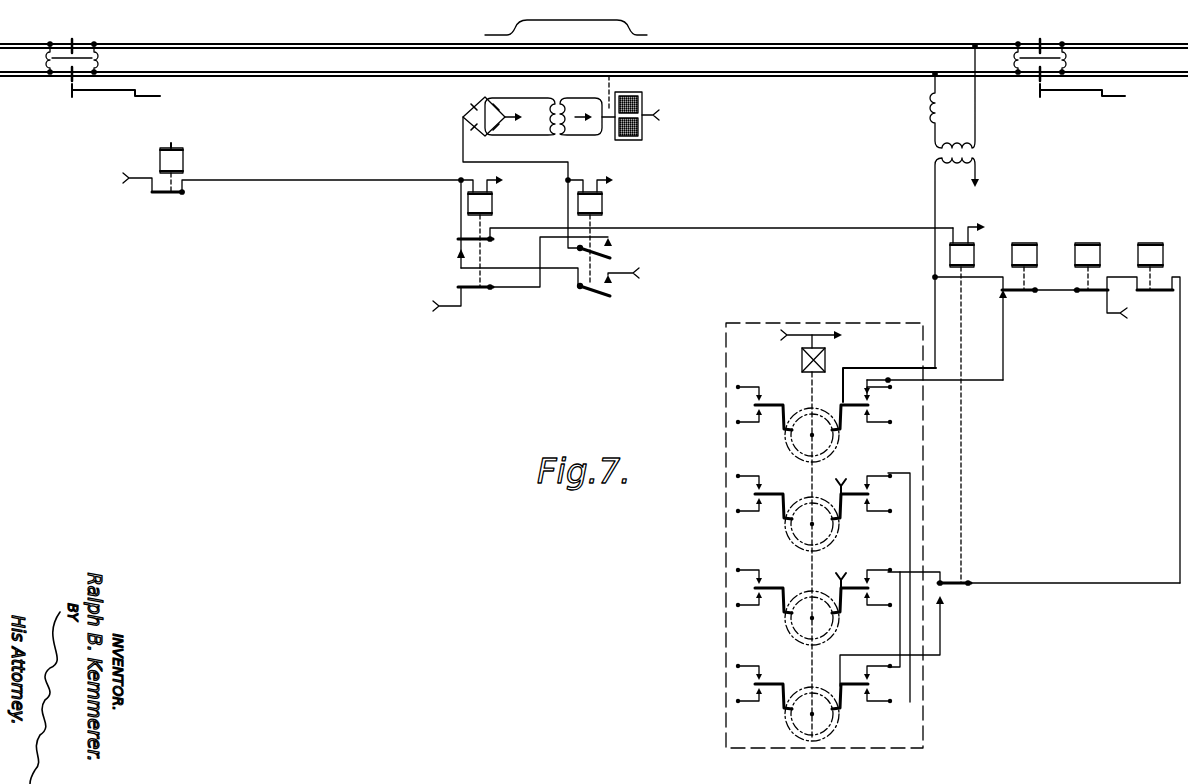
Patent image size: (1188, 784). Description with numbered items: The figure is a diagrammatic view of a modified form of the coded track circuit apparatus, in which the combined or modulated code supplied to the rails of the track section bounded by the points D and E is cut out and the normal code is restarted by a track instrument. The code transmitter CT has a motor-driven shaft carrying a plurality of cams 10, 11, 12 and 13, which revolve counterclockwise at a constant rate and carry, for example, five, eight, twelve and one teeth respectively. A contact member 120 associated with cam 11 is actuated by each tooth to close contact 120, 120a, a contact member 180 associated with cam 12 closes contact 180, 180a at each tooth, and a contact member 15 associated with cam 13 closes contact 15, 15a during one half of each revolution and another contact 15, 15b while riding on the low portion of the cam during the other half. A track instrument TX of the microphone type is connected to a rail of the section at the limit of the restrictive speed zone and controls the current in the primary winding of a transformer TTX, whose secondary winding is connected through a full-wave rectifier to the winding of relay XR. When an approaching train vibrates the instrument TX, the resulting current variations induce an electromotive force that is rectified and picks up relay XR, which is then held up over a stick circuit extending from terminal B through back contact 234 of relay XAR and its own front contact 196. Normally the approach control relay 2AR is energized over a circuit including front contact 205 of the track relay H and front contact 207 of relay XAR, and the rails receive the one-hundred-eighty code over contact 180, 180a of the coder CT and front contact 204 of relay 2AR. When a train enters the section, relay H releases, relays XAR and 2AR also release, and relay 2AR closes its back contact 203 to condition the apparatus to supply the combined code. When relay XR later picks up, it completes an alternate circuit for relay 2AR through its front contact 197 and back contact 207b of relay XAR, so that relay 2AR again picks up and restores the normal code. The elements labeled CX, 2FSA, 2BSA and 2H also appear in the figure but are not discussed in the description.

The track section boundary D is at (103, 58).
The track section boundary E is at (1069, 58).
The relay H is at (171, 159).
The front contact of relay H 205 is at (150, 197).
The transformer TTX is at (556, 136).
The track instrument TX is at (640, 141).
The relay XAR is at (494, 229).
The relay XR is at (597, 228).
The front contact of relay XAR 207 is at (459, 238).
The back contact of relay XAR 207b is at (459, 256).
The back contact of relay XAR 234 is at (462, 292).
The front contact of relay XR 196 is at (611, 245).
The front contact of relay XR 197 is at (611, 288).
The track transformer CX is at (958, 206).
The approach control relay 2AR is at (950, 259).
The relay 2FSA is at (1039, 302).
The relay 2BSA is at (1110, 274).
The relay 2H is at (1158, 404).
The code transmitter CT is at (824, 322).
The cam 10 is at (797, 445).
The cam 11 is at (797, 536).
The cam 12 is at (797, 630).
The cam 13 is at (797, 726).
The contact member 120 is at (858, 500).
The contact 120a is at (869, 481).
The contact member 180 is at (859, 596).
The contact 180a is at (867, 576).
The contact member 15 is at (852, 681).
The contact 15a is at (866, 676).
The contact 15b is at (865, 700).
The back contact of relay 2AR 203 is at (943, 600).
The front contact of relay 2AR 204 is at (946, 580).